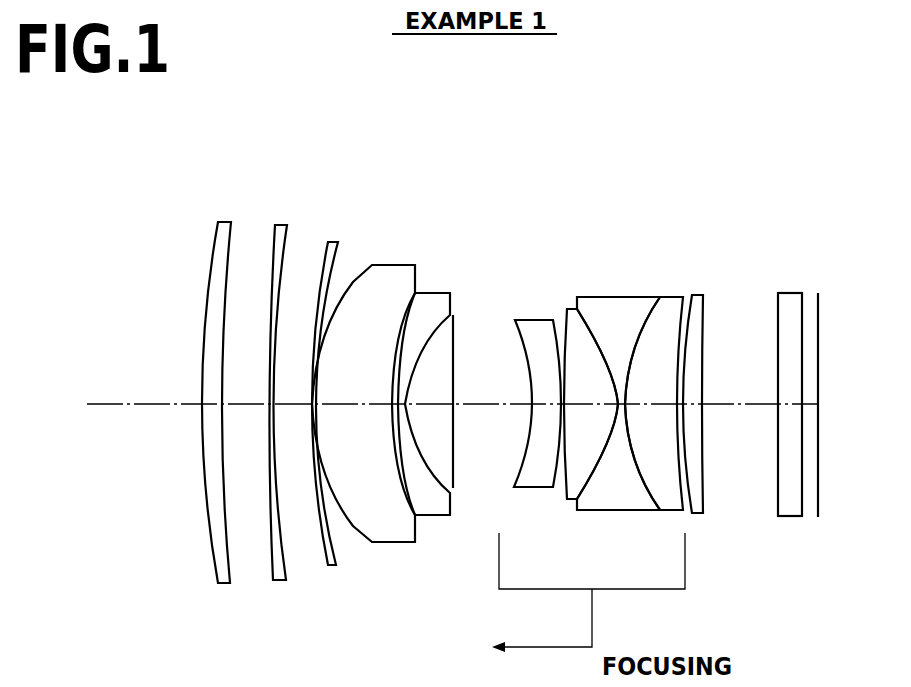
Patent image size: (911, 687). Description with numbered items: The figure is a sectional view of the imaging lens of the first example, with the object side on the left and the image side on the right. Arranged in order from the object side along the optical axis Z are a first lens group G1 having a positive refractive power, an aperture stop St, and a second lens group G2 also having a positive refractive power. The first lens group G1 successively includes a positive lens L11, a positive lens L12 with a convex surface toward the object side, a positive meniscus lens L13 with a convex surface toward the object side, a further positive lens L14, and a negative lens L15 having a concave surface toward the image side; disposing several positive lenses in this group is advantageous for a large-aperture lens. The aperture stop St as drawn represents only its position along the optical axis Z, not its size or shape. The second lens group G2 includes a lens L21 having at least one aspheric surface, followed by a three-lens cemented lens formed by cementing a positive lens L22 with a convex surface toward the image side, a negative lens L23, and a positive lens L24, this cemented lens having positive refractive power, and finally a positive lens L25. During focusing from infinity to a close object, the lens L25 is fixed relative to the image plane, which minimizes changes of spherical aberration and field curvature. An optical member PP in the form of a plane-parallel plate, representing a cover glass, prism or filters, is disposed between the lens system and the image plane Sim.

The optical axis Z is at (107, 402).
The first lens group G1 is at (468, 116).
The positive lens L11 is at (223, 229).
The positive lens L12 is at (280, 229).
The positive meniscus lens L13 is at (329, 246).
The positive lens L14 is at (390, 276).
The negative lens L15 is at (432, 302).
The aperture stop St is at (453, 484).
The second lens group G2 is at (747, 116).
The lens having at least one aspheric surface L21 is at (535, 327).
The positive lens L22 is at (572, 304).
The negative lens L23 is at (615, 304).
The positive lens L24 is at (673, 303).
The positive lens L25 is at (700, 302).
The optical member PP is at (790, 517).
The image plane Sim is at (818, 498).